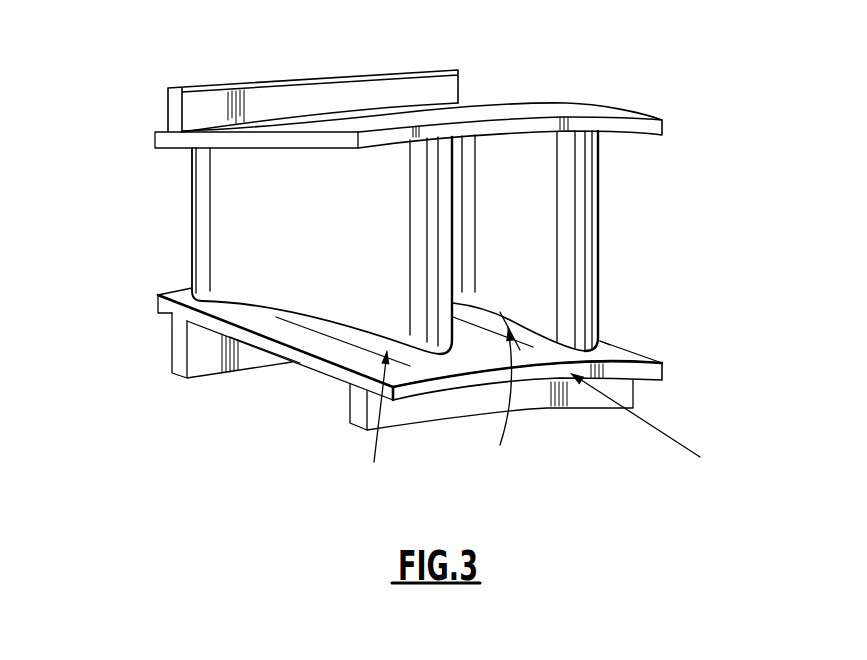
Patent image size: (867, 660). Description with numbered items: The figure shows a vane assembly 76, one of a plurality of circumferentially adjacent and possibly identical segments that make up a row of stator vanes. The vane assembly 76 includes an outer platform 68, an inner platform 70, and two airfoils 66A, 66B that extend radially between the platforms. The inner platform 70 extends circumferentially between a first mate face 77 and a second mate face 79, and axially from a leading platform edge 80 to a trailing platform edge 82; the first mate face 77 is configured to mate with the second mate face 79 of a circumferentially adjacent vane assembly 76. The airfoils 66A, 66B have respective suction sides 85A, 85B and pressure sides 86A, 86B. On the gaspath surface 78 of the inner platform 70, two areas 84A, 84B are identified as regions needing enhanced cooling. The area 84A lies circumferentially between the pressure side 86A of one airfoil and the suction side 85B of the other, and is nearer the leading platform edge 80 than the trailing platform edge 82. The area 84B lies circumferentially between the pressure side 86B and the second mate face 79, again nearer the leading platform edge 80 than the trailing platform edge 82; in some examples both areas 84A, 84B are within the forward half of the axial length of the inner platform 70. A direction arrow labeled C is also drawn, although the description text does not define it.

The vane assembly 76 is at (143, 73).
The outer platform 68 is at (525, 112).
The inner platform 70 is at (613, 353).
The airfoil 66A is at (563, 217).
The airfoil 66B is at (267, 223).
The suction side 85A is at (598, 188).
The suction side 85B is at (452, 180).
The pressure side 86A is at (532, 247).
The pressure side 86B is at (237, 180).
The first mate face 77 is at (607, 342).
The gaspath surface 78 is at (540, 367).
The second mate face 79 is at (305, 360).
The leading platform edge 80 is at (520, 350).
The trailing platform edge 82 is at (157, 303).
The area of gaspath surface 84A is at (488, 394).
The area of gaspath surface 84B is at (352, 415).
The circumferential direction C is at (680, 444).